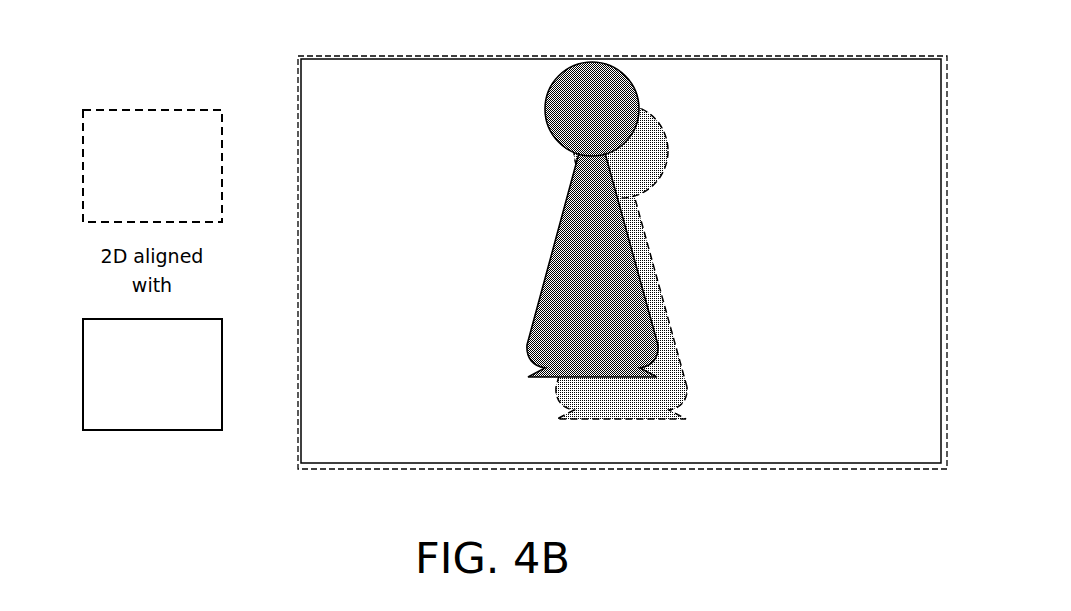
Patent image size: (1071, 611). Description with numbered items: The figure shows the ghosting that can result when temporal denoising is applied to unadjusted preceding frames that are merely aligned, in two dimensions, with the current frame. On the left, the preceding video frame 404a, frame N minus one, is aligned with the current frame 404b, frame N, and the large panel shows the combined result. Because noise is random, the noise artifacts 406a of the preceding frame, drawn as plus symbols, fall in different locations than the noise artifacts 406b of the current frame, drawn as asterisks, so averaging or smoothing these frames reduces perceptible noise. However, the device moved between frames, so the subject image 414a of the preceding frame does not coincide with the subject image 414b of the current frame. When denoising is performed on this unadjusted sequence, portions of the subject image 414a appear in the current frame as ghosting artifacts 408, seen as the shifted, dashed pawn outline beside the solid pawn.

The preceding video frame 404a is at (299, 113).
The current frame 404b is at (298, 430).
The noise artifacts 406a is at (618, 306).
The noise artifacts 406b is at (622, 129).
The ghosting artifacts 408 is at (557, 417).
The subject image of the preceding frame 414a is at (672, 338).
The subject image of the current frame 414b is at (623, 216).